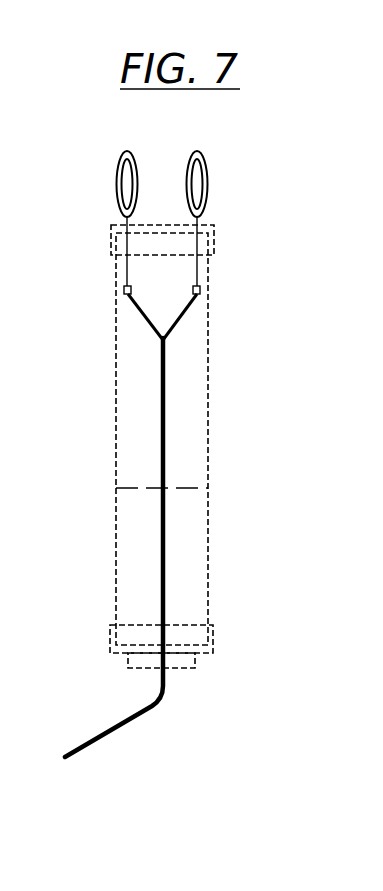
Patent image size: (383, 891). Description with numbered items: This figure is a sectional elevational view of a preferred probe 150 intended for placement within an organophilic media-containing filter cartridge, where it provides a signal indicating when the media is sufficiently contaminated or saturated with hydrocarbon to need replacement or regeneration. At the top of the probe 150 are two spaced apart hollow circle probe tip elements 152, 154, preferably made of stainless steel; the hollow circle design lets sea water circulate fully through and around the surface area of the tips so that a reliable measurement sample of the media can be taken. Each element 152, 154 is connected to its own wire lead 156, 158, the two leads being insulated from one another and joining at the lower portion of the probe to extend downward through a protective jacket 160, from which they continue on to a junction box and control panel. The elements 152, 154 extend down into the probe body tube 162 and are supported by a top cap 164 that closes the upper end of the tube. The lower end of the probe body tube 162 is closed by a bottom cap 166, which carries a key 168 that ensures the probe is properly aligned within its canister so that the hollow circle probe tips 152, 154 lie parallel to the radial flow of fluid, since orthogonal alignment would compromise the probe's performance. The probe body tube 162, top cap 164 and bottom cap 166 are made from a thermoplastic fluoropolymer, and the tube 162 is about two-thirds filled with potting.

The probe 150 is at (241, 378).
The hollow circle probe tip element 152 is at (114, 180).
The hollow circle probe tip element 154 is at (210, 176).
The wire lead 156 is at (139, 312).
The wire lead 158 is at (180, 317).
The protective jacket 160 is at (161, 426).
The probe body tube 162 is at (209, 462).
The top cap 164 is at (214, 228).
The bottom cap 166 is at (214, 634).
The key 168 is at (196, 656).